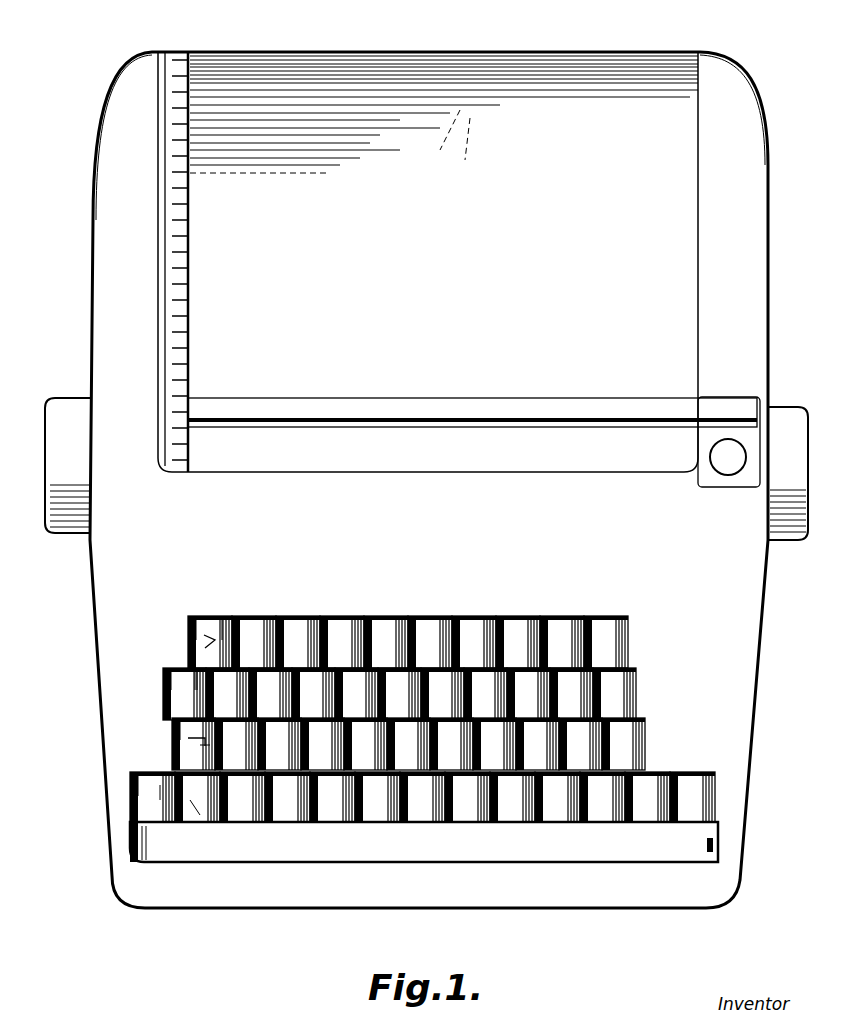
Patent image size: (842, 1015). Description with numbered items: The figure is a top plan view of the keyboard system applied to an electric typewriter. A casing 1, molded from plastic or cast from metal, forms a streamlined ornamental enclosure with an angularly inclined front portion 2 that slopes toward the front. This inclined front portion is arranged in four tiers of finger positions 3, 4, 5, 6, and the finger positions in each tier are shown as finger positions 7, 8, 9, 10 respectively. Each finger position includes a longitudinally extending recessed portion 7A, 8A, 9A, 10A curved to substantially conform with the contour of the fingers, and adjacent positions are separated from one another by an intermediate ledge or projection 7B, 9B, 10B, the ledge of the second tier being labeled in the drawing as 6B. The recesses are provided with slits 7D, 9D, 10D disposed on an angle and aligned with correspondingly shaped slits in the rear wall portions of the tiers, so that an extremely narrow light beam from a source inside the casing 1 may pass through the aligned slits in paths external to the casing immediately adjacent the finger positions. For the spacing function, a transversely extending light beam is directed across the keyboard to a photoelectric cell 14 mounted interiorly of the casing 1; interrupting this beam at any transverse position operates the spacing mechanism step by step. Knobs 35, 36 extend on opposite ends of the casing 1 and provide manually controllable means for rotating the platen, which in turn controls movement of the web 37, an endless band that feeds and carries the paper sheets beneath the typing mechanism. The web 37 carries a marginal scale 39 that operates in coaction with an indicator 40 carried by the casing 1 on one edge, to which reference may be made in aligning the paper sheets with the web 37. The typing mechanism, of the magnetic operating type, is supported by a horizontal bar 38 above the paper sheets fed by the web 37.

The casing 1 is at (100, 623).
The angularly inclined front portion 2 is at (420, 712).
The tier of finger positions 3 is at (392, 612).
The tier of finger positions 4 is at (400, 680).
The tier of finger positions 5 is at (366, 735).
The tier of finger positions 6 is at (423, 819).
The finger position 7 is at (205, 612).
The recessed portion 7A is at (192, 622).
The intermediate ledge 7B is at (238, 618).
The slit 7D is at (208, 640).
The finger position 8 is at (155, 680).
The recessed portion 8A is at (165, 690).
The key portion 6B is at (185, 668).
The finger position 9 is at (151, 735).
The recessed portion 9A is at (106, 742).
The intermediate ledge 9B is at (206, 725).
The slit 9D is at (223, 741).
The finger position 10 is at (168, 819).
The recessed portion 10A is at (130, 813).
The intermediate ledge 10B is at (183, 778).
The slit 10D is at (208, 792).
The photoelectric cell 14 is at (714, 846).
The knob 35 is at (80, 447).
The knob 36 is at (784, 410).
The web 37 is at (210, 245).
The horizontal bar 38 is at (650, 408).
The marginal scale 39 is at (182, 64).
The indicator 40 is at (148, 404).